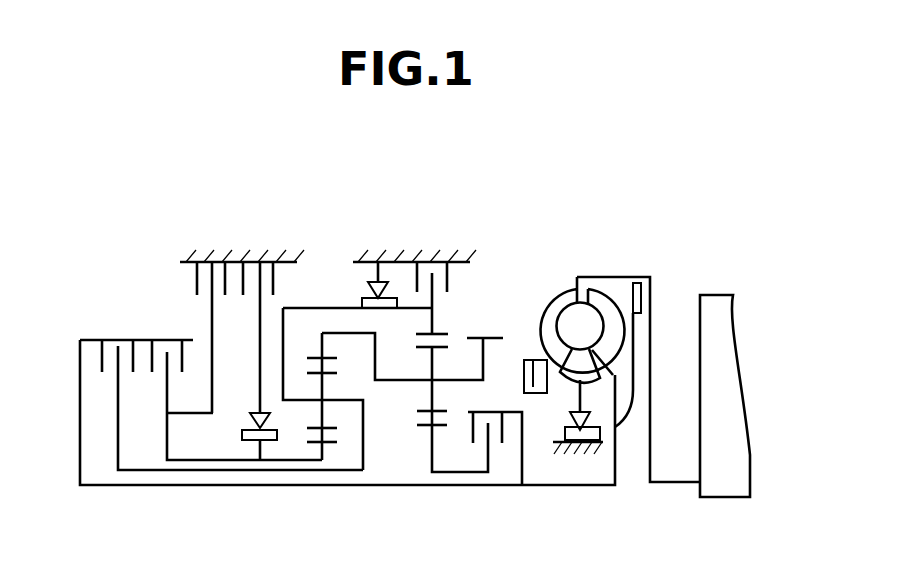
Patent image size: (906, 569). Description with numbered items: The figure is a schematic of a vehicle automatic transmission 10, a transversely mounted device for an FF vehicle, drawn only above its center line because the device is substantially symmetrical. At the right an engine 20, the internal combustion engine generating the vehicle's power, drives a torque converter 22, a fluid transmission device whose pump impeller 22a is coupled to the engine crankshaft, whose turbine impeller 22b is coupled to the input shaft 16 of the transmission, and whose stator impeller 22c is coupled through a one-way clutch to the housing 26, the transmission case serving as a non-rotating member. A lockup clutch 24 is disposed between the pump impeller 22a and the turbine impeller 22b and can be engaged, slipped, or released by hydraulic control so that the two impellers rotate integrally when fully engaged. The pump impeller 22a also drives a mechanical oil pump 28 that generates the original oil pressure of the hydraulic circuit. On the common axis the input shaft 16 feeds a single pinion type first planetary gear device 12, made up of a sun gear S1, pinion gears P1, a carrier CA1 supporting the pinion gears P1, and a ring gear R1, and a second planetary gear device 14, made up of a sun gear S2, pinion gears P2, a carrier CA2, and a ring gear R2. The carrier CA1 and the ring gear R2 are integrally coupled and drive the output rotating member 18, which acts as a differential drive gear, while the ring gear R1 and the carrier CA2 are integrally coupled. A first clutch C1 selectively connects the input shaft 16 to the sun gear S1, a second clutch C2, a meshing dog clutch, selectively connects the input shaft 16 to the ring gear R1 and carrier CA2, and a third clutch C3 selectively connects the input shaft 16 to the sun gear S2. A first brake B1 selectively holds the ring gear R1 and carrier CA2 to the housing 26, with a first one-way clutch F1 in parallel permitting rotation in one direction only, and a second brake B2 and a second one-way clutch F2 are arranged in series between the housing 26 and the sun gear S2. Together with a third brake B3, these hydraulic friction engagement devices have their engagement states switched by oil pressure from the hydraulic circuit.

The vehicle automatic transmission 10 is at (520, 152).
The first planetary gear device 12 is at (429, 439).
The second planetary gear device 14 is at (347, 430).
The input shaft 16 is at (568, 485).
The output rotating member 18 is at (486, 338).
The engine 20 is at (717, 296).
The torque converter 22 is at (604, 340).
The pump impeller 22a is at (547, 305).
The turbine impeller 22b is at (612, 338).
The stator impeller 22c is at (571, 375).
The lockup clutch 24 is at (641, 322).
The housing 26 is at (243, 257).
The mechanical oil pump 28 is at (534, 360).
The first brake B1 is at (448, 298).
The second brake B2 is at (275, 337).
The third brake B3 is at (199, 337).
The first clutch C1 is at (495, 438).
The second clutch C2 is at (221, 395).
The third clutch C3 is at (236, 390).
The first one-way clutch F1 is at (370, 285).
The second one-way clutch F2 is at (254, 427).
The ring gear R1 is at (424, 332).
The ring gear R2 is at (315, 357).
The pinion gears P1 is at (438, 349).
The pinion gears P2 is at (328, 373).
The sun gear S1 is at (437, 428).
The sun gear S2 is at (331, 457).
The carrier CA1 is at (425, 382).
The carrier CA2 is at (282, 390).